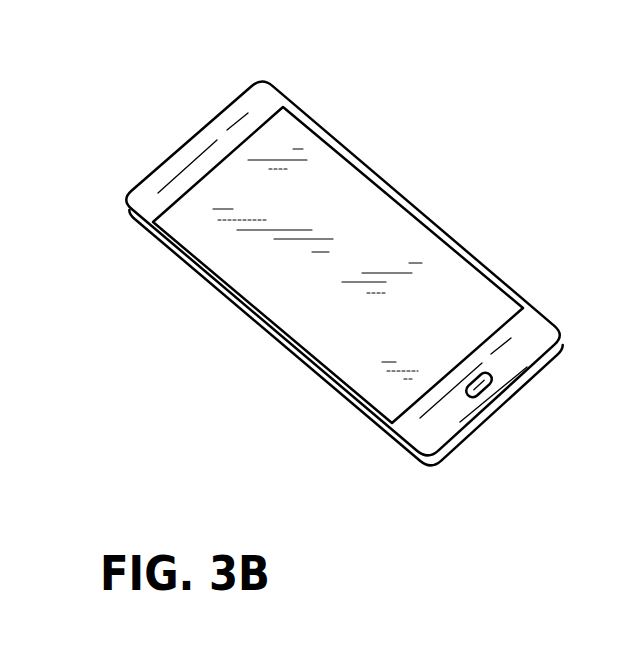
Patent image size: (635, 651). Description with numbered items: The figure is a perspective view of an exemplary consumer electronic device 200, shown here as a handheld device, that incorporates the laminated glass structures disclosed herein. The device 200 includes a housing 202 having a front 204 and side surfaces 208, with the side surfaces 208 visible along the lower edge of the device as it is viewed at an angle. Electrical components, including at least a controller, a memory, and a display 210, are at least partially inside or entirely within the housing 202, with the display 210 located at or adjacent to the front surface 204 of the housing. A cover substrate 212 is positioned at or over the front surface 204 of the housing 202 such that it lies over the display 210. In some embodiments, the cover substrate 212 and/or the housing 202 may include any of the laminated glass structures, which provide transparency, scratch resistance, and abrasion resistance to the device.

The consumer electronic device 200 is at (198, 99).
The housing 202 is at (263, 112).
The front surface 204 is at (533, 335).
The side surfaces 208 is at (185, 263).
The display 210 is at (352, 212).
The cover substrate 212 is at (340, 345).